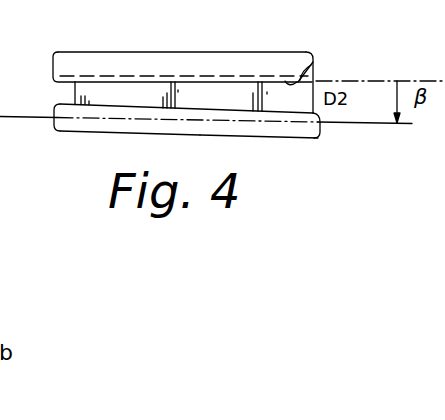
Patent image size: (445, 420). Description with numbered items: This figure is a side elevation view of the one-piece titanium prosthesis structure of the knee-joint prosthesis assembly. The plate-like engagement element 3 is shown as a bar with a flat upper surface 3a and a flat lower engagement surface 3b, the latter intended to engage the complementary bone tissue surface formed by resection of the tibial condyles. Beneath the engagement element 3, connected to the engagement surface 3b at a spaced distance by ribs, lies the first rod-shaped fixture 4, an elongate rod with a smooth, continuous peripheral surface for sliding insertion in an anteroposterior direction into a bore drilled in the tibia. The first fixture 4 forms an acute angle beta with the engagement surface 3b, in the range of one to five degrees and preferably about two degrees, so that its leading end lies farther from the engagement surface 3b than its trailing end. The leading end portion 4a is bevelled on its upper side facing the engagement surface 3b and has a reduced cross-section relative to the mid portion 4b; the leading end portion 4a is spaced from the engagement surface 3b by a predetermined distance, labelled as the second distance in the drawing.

The plate-like engagement element 3 is at (84, 70).
The flat upper surface 3a is at (172, 52).
The flat lower engagement surface 3b is at (312, 64).
The first rod-shaped fixture 4 is at (74, 123).
The leading end portion 4a is at (316, 134).
The mid portion 4b is at (255, 127).